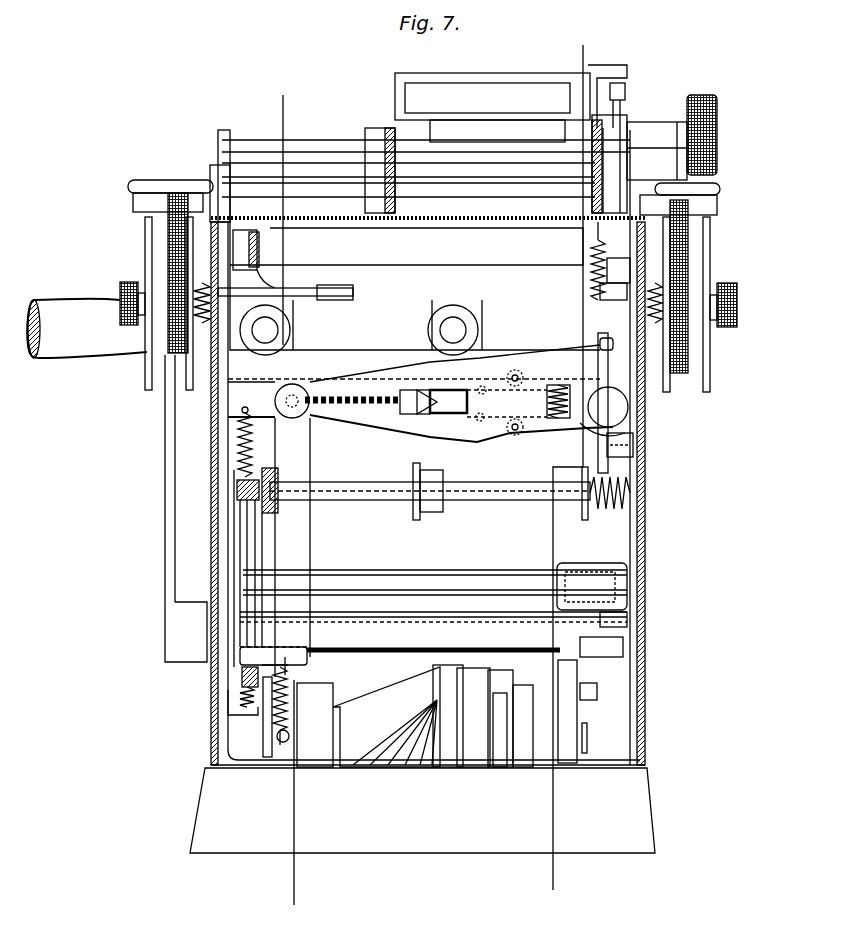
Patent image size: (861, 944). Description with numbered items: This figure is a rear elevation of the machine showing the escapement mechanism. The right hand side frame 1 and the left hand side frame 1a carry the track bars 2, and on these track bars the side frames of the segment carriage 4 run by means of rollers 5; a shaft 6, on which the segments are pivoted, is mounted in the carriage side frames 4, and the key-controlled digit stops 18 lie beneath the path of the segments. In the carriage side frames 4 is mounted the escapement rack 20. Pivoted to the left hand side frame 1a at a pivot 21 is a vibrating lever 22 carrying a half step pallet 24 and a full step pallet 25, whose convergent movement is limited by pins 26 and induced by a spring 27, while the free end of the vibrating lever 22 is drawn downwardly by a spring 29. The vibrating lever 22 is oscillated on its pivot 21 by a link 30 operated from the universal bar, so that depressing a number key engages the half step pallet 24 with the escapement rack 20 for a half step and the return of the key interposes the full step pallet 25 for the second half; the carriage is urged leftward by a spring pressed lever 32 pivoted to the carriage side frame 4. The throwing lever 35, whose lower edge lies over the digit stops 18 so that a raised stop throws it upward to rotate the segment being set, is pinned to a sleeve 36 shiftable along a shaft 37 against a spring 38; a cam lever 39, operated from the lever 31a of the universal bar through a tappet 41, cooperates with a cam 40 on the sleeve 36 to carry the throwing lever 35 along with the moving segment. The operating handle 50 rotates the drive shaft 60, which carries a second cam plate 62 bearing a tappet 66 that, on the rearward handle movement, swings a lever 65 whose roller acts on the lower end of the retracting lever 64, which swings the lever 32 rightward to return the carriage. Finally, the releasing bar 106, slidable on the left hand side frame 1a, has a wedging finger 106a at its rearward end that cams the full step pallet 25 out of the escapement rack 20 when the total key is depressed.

The right hand side frame 1 is at (217, 688).
The left hand side frame 1a is at (633, 548).
The track bars 2 is at (492, 363).
The side frames of the segment carriage 4 is at (292, 312).
The rollers 5 is at (288, 340).
The shaft 6 is at (289, 496).
The digit stops 18 is at (497, 672).
The escapement rack 20 is at (310, 421).
The pivot 21 is at (630, 407).
The vibrating lever 22 is at (593, 427).
The half step pallet 24 is at (397, 417).
The full step pallet 25 is at (435, 415).
The pins 26 is at (507, 402).
The spring 27 is at (565, 420).
The spring 29 is at (237, 453).
The link 30 is at (300, 547).
The lever of universal bar 31a is at (277, 736).
The spring pressed lever 32 is at (315, 290).
The throwing lever 35 is at (410, 525).
The sleeve 36 is at (430, 506).
The shaft 37 is at (240, 487).
The spring 38 is at (623, 493).
The cam lever 39 is at (250, 522).
The cam 40 is at (278, 510).
The tappet 41 is at (282, 670).
The operating handle 50 is at (92, 345).
The drive shaft 60 is at (433, 610).
The second cam plate 62 is at (230, 707).
The retracting lever 64 is at (244, 350).
The lever 65 is at (235, 565).
The tappet 66 is at (247, 660).
The releasing bar 106 is at (603, 463).
The wedging finger 106a is at (603, 350).